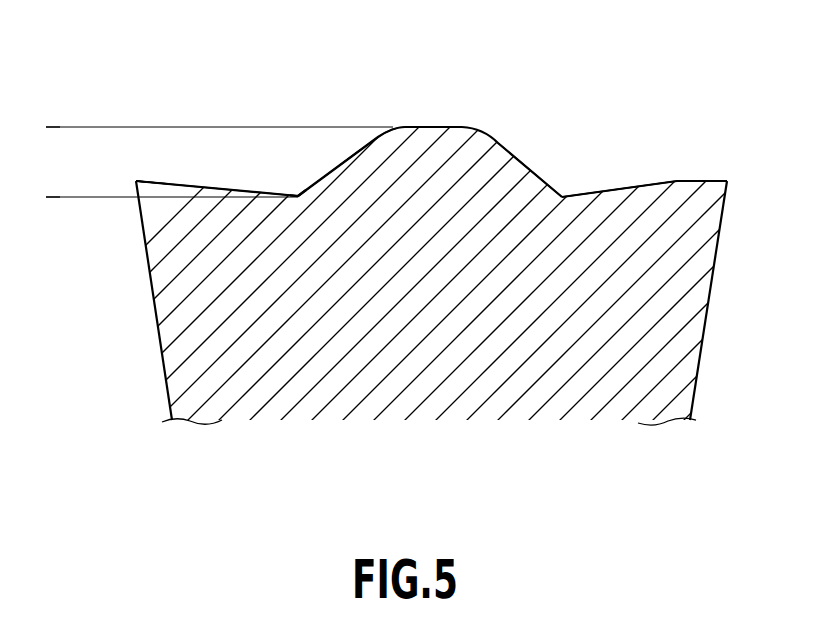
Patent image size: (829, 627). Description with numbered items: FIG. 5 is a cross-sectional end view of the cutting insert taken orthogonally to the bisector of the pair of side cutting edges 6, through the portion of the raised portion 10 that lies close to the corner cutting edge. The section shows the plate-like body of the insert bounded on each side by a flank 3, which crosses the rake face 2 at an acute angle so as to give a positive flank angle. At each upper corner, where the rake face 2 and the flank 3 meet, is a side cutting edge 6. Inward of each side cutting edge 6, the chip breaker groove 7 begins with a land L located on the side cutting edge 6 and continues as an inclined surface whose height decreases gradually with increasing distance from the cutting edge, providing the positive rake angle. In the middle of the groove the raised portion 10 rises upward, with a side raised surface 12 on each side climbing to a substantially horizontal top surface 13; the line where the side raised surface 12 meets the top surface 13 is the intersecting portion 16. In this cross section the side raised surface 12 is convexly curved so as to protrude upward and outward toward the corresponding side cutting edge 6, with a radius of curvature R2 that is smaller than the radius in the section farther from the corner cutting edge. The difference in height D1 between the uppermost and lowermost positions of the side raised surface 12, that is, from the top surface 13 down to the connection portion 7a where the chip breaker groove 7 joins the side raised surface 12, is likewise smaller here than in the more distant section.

The rake face 2 is at (199, 158).
The flank 3 is at (148, 277).
The side cutting edge 6 is at (135, 181).
The chip breaker groove 7 is at (243, 186).
The connection portion 7a is at (298, 194).
The raised portion 10 is at (422, 108).
The side raised surface 12 is at (362, 148).
The top surface 13 is at (434, 127).
The intersecting portion 16 is at (405, 127).
The land L is at (141, 180).
The difference in height D1 is at (55, 127).
The radius of curvature R2 is at (347, 160).